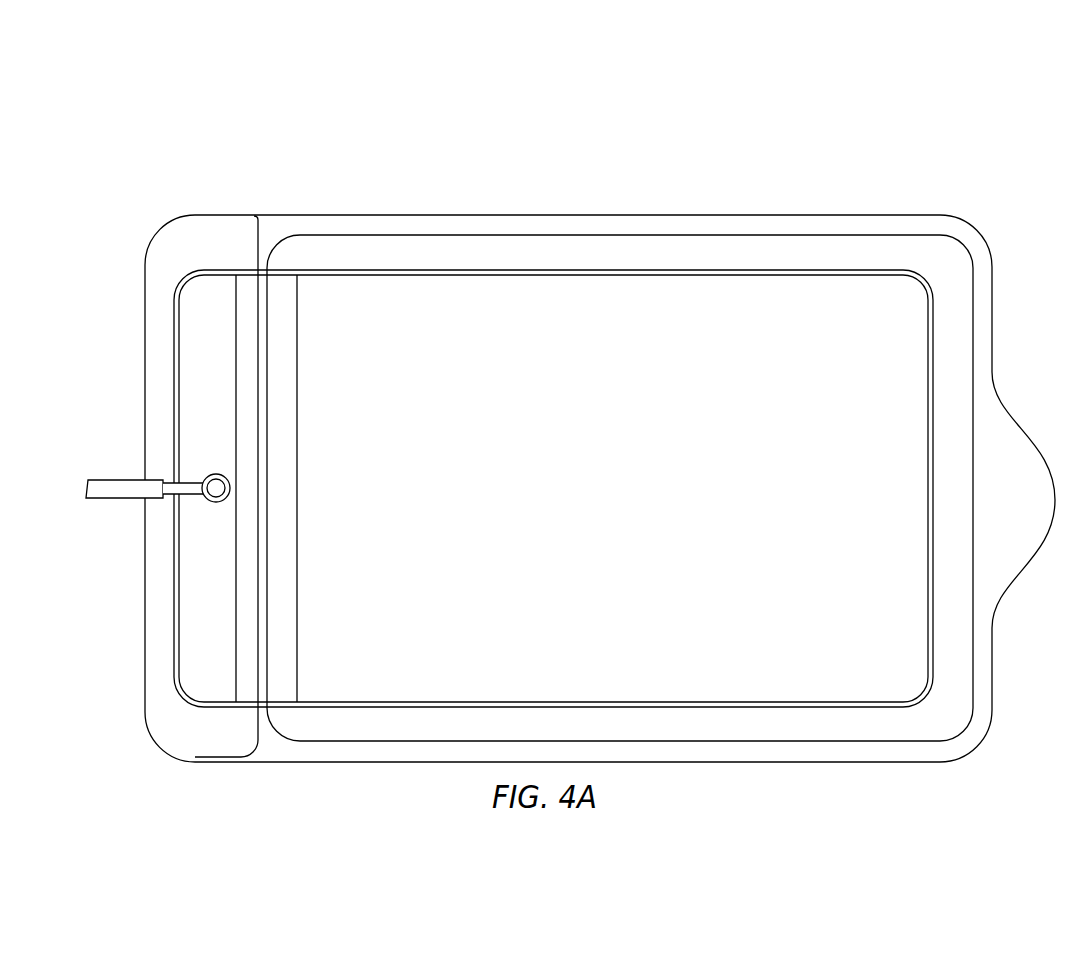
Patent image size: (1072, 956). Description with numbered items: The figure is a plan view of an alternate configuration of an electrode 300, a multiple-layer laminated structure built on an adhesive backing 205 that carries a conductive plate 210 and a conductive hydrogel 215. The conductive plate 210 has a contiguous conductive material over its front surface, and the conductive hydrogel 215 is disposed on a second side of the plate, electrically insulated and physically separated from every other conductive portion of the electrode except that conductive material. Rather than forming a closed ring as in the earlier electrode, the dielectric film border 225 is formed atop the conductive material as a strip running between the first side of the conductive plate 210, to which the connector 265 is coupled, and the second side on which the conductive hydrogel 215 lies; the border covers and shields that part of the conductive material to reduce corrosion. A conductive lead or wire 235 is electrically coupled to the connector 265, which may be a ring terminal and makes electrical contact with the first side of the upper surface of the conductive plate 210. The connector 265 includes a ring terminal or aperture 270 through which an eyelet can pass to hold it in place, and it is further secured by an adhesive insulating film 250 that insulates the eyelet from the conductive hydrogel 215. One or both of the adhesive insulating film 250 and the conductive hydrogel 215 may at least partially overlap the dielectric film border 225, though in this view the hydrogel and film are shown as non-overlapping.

The electrode 300 is at (845, 177).
The adhesive insulating film 250 is at (162, 365).
The adhesive backing 205 is at (377, 227).
The conductive hydrogel 215 is at (638, 260).
The conductive plate 210 is at (516, 313).
The dielectric film border 225 is at (250, 300).
The conductive lead or wire 235 is at (115, 488).
The connector 265 is at (178, 501).
The ring terminal or aperture 270 is at (216, 488).